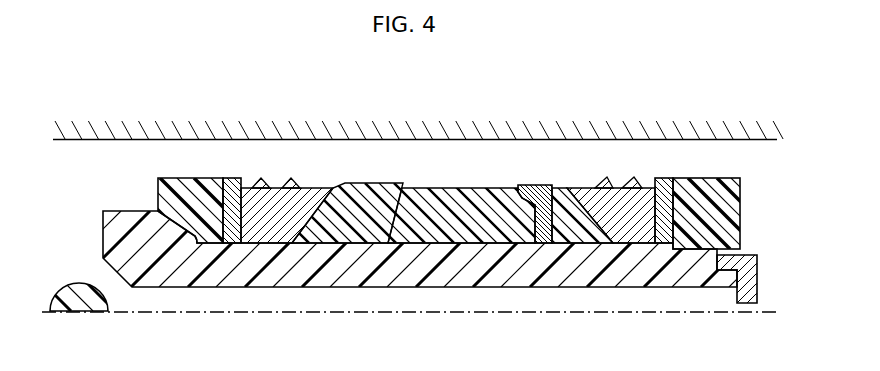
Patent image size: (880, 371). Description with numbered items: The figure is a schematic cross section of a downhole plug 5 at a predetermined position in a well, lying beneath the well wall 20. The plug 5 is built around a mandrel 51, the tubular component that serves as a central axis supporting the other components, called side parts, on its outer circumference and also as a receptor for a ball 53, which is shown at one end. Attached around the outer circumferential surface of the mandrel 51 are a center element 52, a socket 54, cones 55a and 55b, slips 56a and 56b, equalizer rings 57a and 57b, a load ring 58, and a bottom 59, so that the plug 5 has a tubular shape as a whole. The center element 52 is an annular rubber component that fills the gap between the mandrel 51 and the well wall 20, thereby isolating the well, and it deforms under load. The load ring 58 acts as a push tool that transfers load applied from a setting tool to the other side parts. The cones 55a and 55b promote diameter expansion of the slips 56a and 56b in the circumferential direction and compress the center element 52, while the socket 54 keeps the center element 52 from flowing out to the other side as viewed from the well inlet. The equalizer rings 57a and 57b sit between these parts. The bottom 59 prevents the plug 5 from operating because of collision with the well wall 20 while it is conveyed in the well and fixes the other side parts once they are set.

The well wall 20 is at (747, 140).
The downhole plug 5 is at (425, 265).
The mandrel 51 is at (113, 238).
The center element 52 is at (464, 228).
The ball 53 is at (68, 292).
The socket 54 is at (542, 228).
The cone 55a is at (347, 228).
The cone 55b is at (581, 228).
The slip 56a is at (271, 228).
The slip 56b is at (632, 228).
The equalizer ring 57a is at (232, 228).
The equalizer ring 57b is at (665, 228).
The load ring 58 is at (197, 228).
The bottom 59 is at (702, 228).